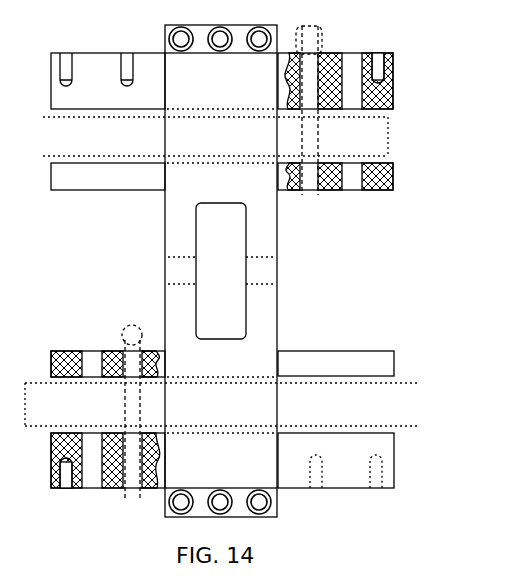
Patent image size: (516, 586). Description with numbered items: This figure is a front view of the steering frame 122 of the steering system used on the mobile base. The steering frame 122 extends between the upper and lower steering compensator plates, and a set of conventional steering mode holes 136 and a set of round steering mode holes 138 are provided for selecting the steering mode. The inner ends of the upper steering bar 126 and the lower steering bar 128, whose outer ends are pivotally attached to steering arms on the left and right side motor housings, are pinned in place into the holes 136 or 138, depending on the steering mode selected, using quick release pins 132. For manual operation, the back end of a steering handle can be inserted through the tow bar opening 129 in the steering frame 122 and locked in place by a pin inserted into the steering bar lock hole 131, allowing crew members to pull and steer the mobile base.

The steering frame 122 is at (314, 234).
The upper steering bar 126 is at (43, 113).
The lower steering bar 128 is at (425, 426).
The tow bar opening 129 is at (224, 238).
The steering bar lock hole 131 is at (268, 276).
The quick release pin 132 is at (322, 32).
The conventional steering mode hole 136 is at (122, 490).
The round steering mode hole 138 is at (90, 487).